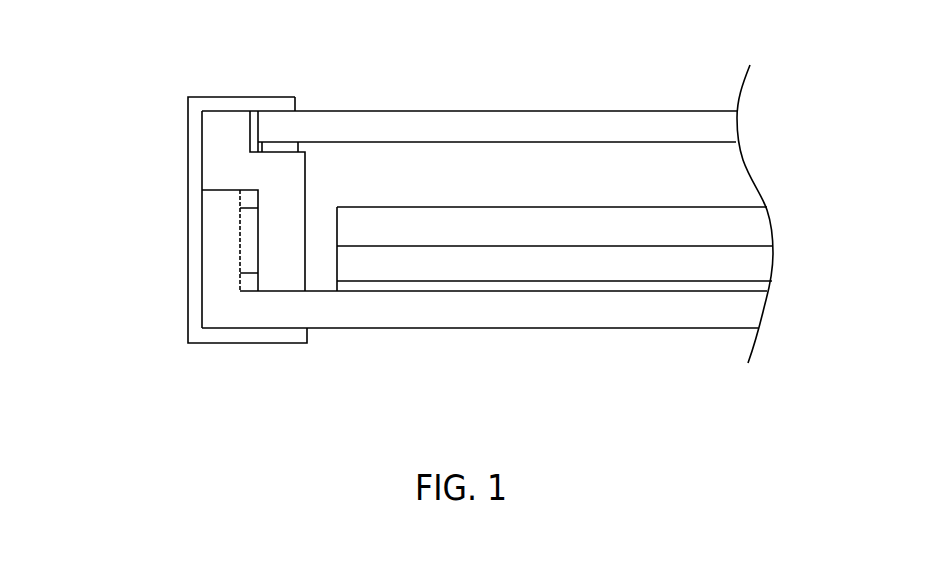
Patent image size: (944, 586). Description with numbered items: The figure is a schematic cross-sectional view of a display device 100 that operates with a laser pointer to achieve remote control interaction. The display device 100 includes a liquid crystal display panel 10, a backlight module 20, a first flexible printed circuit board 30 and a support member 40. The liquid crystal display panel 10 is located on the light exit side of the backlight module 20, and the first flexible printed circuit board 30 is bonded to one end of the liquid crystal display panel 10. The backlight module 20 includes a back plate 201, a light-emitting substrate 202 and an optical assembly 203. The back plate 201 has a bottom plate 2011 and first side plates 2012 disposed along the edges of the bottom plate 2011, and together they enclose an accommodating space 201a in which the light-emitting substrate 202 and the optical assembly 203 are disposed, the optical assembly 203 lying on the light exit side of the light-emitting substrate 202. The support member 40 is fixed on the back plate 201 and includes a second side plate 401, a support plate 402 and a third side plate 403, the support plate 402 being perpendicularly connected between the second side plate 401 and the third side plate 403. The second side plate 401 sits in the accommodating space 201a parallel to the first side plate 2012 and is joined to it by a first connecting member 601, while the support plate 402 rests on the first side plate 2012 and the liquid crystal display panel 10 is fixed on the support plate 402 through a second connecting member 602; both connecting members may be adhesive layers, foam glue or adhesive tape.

The display device 100 is at (446, 31).
The liquid crystal display panel 10 is at (703, 127).
The backlight module 20 is at (768, 195).
The back plate 201 is at (393, 393).
The bottom plate 2011 is at (372, 303).
The first side plate 2012 is at (217, 273).
The accommodating space 201a is at (325, 250).
The light-emitting substrate 202 is at (735, 272).
The optical assembly 203 is at (735, 230).
The first flexible printed circuit board 30 is at (196, 278).
The support member 40 is at (102, 113).
The second side plate 401 is at (268, 207).
The support plate 402 is at (270, 169).
The third side plate 403 is at (227, 130).
The first connecting member 601 is at (250, 250).
The second connecting member 602 is at (279, 145).